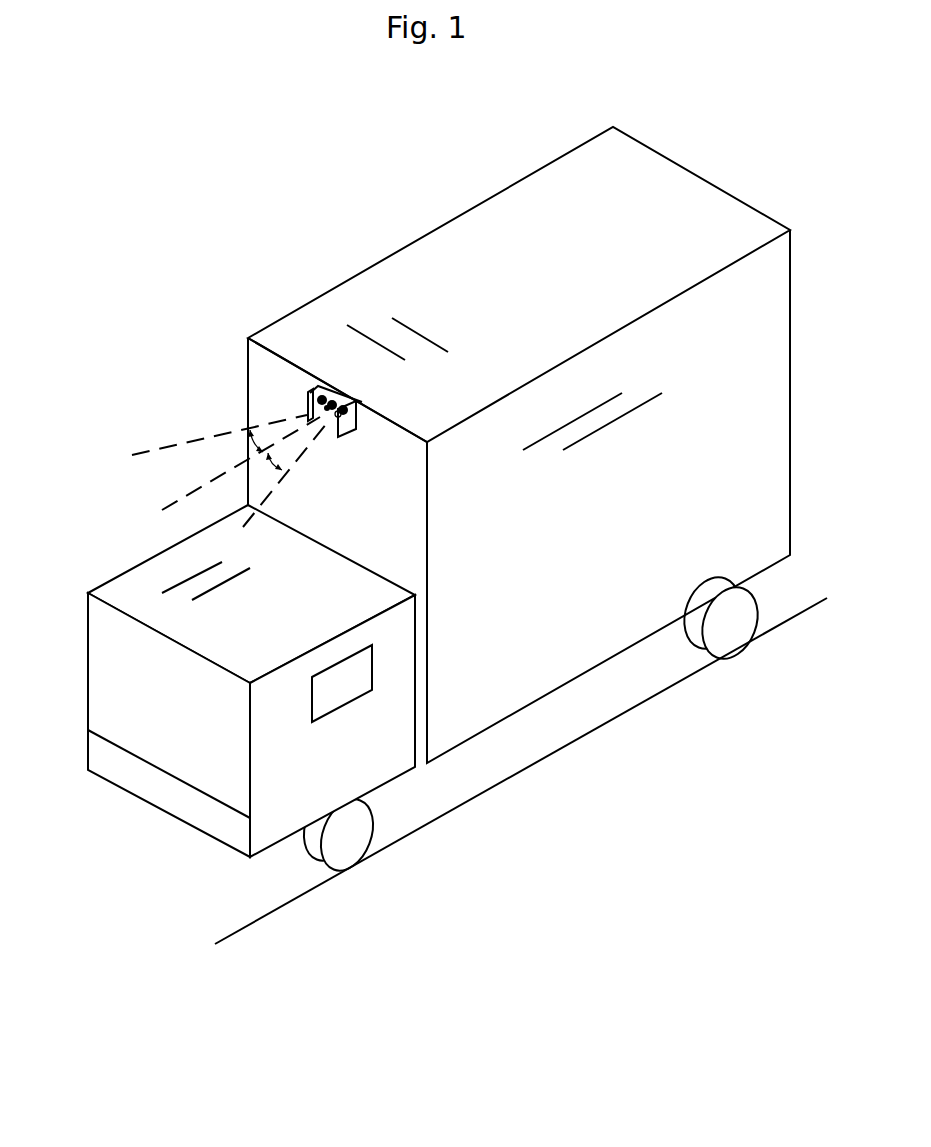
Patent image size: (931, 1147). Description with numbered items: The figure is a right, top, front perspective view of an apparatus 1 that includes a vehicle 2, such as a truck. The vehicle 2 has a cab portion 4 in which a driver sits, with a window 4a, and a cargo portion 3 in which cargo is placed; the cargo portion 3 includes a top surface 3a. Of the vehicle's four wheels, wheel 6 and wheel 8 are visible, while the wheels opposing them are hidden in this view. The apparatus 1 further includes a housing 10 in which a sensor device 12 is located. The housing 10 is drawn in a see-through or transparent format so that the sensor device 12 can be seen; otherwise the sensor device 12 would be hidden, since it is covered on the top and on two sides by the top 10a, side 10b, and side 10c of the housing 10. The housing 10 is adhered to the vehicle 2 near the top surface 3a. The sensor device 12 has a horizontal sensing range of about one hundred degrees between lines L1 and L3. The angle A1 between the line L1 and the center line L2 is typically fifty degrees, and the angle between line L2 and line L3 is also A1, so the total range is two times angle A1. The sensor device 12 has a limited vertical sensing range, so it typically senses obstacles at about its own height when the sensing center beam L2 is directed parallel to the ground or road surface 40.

The apparatus 1 is at (712, 144).
The vehicle 2 is at (545, 228).
The cargo portion 3 is at (477, 250).
The top surface 3a is at (398, 275).
The cab portion 4 is at (127, 590).
The window 4a is at (338, 687).
The wheel 6 is at (347, 835).
The wheel 8 is at (728, 628).
The housing 10 is at (307, 405).
The top 10a is at (325, 387).
The side 10b is at (308, 402).
The side 10c is at (355, 423).
The sensor device 12 is at (340, 398).
The ground or road surface 40 is at (567, 745).
The line L1 is at (168, 442).
The line L2 is at (170, 502).
The line L3 is at (307, 455).
The angle A1 is at (252, 448).